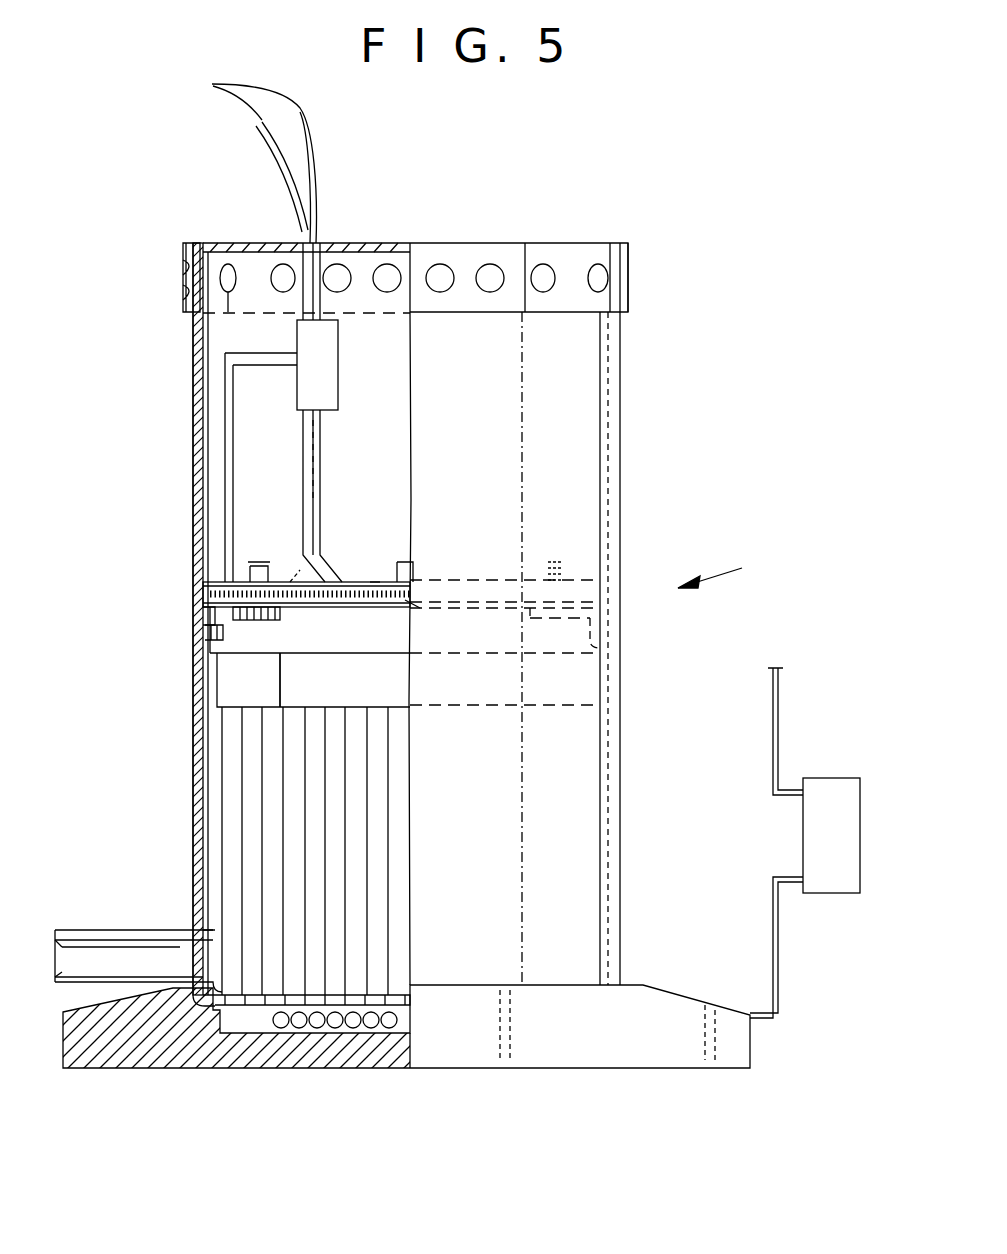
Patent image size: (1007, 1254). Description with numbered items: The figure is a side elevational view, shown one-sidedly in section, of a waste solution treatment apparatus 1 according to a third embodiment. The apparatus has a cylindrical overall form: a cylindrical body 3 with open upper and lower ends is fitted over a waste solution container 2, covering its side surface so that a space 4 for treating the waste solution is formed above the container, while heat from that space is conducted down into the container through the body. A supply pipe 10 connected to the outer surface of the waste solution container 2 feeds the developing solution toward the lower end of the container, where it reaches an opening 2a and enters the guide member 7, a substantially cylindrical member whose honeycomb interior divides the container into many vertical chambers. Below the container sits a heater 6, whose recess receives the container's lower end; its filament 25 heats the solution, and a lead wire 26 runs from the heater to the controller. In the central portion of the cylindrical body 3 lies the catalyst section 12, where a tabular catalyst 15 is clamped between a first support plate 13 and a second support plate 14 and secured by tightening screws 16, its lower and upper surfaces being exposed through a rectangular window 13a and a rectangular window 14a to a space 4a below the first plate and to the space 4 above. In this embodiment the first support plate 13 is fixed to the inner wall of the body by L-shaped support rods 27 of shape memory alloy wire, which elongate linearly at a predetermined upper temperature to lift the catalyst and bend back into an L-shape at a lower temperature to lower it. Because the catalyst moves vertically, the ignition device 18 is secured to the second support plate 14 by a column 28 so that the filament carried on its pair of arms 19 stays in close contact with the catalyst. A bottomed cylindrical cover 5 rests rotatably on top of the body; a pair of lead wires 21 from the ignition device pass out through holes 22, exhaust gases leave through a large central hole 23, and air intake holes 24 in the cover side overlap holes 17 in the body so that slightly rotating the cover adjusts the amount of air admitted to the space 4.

The waste solution treatment apparatus 1 is at (756, 578).
The waste solution container 2 is at (192, 808).
The opening 2a is at (207, 960).
The cylindrical body 3 is at (192, 348).
The space 4 is at (384, 470).
The space 4a is at (364, 643).
The cover 5 is at (562, 245).
The heater 6 is at (480, 1038).
The guide member 7 is at (279, 1024).
The supply pipe 10 is at (103, 930).
The catalyst section 12 is at (410, 655).
The first support plate 13 is at (205, 606).
The rectangular window 13a is at (312, 680).
The second support plate 14 is at (222, 585).
The rectangular window 14a is at (300, 584).
The catalyst 15 is at (372, 578).
The tightening screws 16 is at (313, 680).
The holes 17 is at (228, 270).
The ignition device 18 is at (392, 355).
The arms 19 is at (320, 440).
The lead wires 21 is at (802, 722).
The holes 22 is at (305, 240).
The hole 23 is at (378, 248).
The holes 24 is at (186, 278).
The filament 25 is at (349, 1026).
The lead wire 26 is at (778, 947).
The support rods 27 is at (200, 632).
The column 28 is at (228, 440).